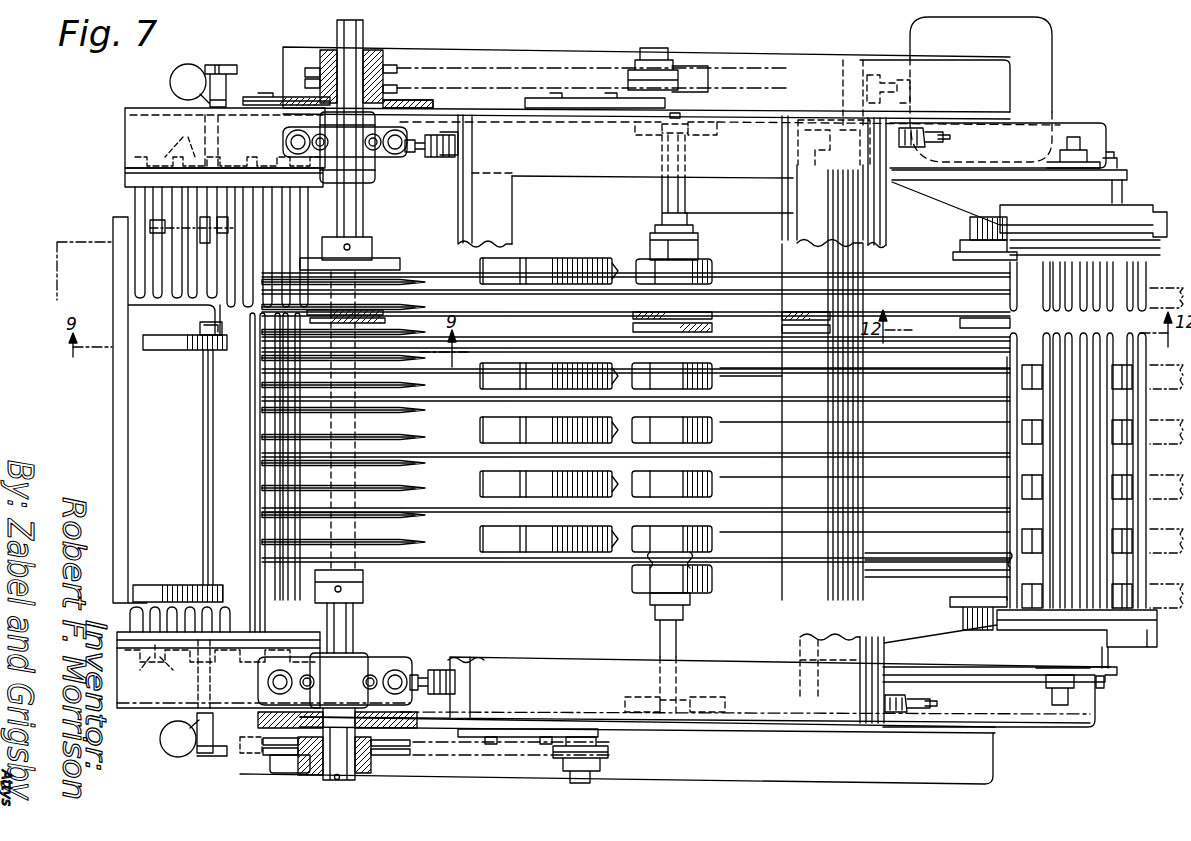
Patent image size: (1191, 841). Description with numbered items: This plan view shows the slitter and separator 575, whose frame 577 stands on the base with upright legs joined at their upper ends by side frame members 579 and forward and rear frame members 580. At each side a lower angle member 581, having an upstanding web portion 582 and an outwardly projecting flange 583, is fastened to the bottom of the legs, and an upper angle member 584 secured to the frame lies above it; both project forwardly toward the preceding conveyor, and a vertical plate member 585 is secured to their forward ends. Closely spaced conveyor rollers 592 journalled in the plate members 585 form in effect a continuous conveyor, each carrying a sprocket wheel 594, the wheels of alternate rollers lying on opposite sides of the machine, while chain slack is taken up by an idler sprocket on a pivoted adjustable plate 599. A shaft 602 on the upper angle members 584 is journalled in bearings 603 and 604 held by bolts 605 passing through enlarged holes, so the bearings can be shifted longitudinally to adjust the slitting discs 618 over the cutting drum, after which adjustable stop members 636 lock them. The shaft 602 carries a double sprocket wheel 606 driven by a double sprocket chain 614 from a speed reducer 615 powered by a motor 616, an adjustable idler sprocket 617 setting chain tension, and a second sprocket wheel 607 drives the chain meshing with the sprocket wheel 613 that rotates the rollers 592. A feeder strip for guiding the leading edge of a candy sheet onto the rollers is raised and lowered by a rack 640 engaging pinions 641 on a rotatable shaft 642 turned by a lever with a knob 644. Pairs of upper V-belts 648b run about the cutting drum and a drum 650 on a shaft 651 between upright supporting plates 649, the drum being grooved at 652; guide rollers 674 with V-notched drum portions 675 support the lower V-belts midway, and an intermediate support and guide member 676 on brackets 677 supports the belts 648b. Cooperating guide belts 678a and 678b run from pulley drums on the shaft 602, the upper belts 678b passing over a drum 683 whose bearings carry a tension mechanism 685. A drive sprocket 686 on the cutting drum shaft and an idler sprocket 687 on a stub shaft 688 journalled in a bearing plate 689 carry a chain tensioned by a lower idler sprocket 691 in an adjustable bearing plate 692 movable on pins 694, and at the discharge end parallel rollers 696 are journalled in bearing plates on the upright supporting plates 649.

The slitter and separator 575 is at (1018, 107).
The frame 577 is at (858, 643).
The side frame members 579 is at (556, 167).
The forward and rear frame members 580 is at (514, 244).
The angle member 581 is at (778, 778).
The upstanding web portion 582 is at (810, 730).
The outwardly projecting flange 583 is at (857, 780).
The angle member 584 is at (147, 112).
The plate member 585 is at (125, 181).
The conveyor rollers 592 is at (163, 586).
The sprocket wheel 594 is at (166, 409).
The adjustable plate 599 is at (268, 127).
The shaft 602 is at (350, 628).
The bearing 603 is at (362, 660).
The bearing 604 is at (360, 196).
The bolts 605 is at (268, 683).
The double sprocket wheel 606 is at (380, 52).
The second sprocket wheel 607 is at (425, 103).
The sprocket wheel 613 is at (256, 90).
The double sprocket chain 614 is at (452, 68).
The speed reducer 615 is at (737, 206).
The motor 616 is at (915, 40).
The adjustable idler sprocket 617 is at (675, 60).
The slitting discs 618 is at (395, 312).
The adjustable stop members 636 is at (418, 152).
The rack 640 is at (196, 334).
The pinions 641 is at (205, 352).
The rotatable shaft 642 is at (203, 434).
The knob 644 is at (174, 72).
The V-belts 648b is at (872, 478).
The upright supporting plates 649 is at (966, 180).
The drum 650 is at (935, 263).
The shaft 651 is at (978, 228).
The grooves 652 is at (910, 560).
The guide rollers 674 is at (700, 440).
The V-notched drum portion 675 is at (648, 573).
The intermediate support and guide member 676 is at (717, 582).
The brackets 677 is at (698, 138).
The guide belts 678a is at (510, 367).
The guide belts 678b is at (770, 415).
The drum 683 is at (790, 378).
The tension mechanism 685 is at (930, 152).
The drive sprocket 686 is at (295, 762).
The idler sprocket 687 is at (385, 760).
The stub shaft 688 is at (338, 780).
The bearing plate 689 is at (262, 742).
The lower idler sprocket 691 is at (605, 763).
The adjustable bearing plate 692 is at (523, 727).
The pins 694 is at (546, 746).
The rollers 696 is at (1088, 612).